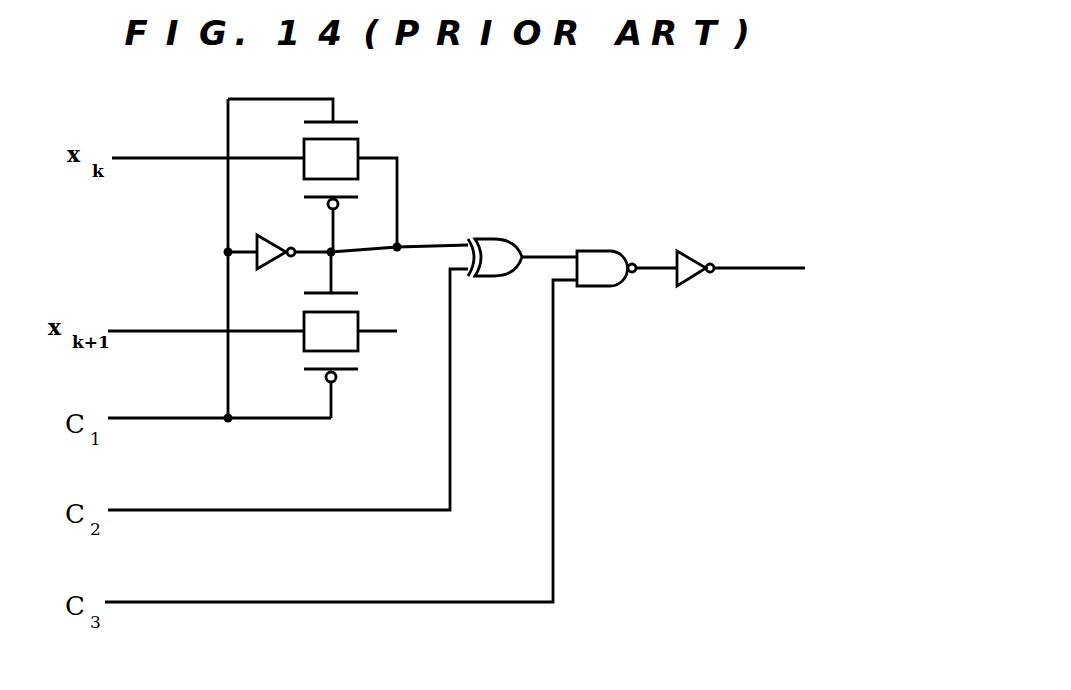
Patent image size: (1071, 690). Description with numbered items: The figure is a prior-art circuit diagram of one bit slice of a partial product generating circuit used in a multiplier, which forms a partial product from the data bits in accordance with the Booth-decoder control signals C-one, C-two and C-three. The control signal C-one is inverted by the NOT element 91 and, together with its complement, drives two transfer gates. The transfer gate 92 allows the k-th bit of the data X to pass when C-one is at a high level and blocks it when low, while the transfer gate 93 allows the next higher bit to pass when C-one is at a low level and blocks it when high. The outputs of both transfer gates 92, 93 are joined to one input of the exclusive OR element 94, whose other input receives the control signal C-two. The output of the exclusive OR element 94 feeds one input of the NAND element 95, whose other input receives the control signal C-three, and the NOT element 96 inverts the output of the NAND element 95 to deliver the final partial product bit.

The NOT element 91 is at (268, 243).
The transfer gate 92 is at (352, 148).
The transfer gate 93 is at (352, 345).
The exclusive OR element 94 is at (497, 250).
The NAND element 95 is at (597, 260).
The NOT element 96 is at (693, 258).